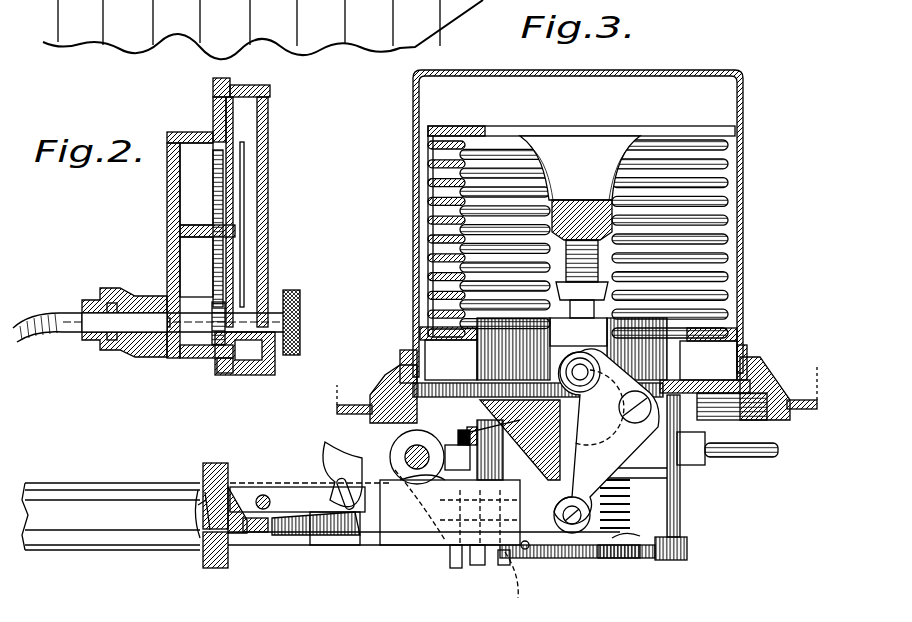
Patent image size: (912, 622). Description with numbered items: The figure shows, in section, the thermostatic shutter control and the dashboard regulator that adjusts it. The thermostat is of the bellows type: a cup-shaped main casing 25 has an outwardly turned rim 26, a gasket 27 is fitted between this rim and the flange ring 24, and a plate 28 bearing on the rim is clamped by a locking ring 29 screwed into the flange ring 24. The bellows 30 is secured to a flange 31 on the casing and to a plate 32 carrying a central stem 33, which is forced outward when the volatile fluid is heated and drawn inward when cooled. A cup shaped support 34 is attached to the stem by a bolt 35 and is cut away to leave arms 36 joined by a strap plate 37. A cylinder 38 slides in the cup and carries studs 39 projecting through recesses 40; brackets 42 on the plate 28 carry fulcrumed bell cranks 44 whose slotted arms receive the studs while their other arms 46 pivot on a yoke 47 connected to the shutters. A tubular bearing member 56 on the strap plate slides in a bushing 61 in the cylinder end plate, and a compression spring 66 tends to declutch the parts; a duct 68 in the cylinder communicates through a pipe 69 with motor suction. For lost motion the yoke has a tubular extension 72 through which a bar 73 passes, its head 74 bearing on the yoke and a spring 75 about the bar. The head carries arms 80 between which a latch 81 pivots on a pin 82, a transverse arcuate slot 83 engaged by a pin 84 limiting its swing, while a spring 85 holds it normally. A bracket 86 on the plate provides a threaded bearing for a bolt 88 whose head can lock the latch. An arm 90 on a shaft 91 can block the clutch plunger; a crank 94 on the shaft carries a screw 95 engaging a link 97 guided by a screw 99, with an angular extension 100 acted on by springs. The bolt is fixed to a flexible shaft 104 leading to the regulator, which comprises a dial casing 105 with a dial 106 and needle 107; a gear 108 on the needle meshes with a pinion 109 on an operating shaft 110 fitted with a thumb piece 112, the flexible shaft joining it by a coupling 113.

In FIG. 2, the flexible shaft 104 is at (45, 312).
In FIG. 2, the dial casing 105 is at (270, 87).
In FIG. 2, the dial 106 is at (233, 123).
In FIG. 2, the needle 107 is at (244, 153).
In FIG. 2, the gear 108 is at (223, 258).
In FIG. 2, the pinion 109 is at (222, 345).
In FIG. 2, the operating shaft 110 is at (250, 318).
In FIG. 2, the thumb piece 112 is at (300, 320).
In FIG. 2, the coupling 113 is at (120, 295).
In FIG. 3, the flange ring 24 is at (770, 365).
In FIG. 3, the main casing 25 is at (740, 330).
In FIG. 3, the outwardly turned rim 26 is at (385, 378).
In FIG. 3, the gasket 27 is at (410, 355).
In FIG. 3, the plate 28 is at (690, 357).
In FIG. 3, the locking ring 29 is at (715, 420).
In FIG. 3, the bellows 30 is at (743, 235).
In FIG. 3, the flange 31 is at (745, 348).
In FIG. 3, the plate 32 is at (472, 126).
In FIG. 3, the central stem 33 is at (580, 168).
In FIG. 3, the cup shaped support 34 is at (472, 357).
In FIG. 3, the bolt 35 is at (598, 258).
In FIG. 3, the arms 36 is at (680, 505).
In FIG. 3, the strap plate 37 is at (660, 560).
In FIG. 3, the cylinder 38 is at (647, 477).
In FIG. 3, the studs 39 is at (572, 375).
In FIG. 3, the recesses 40 is at (603, 336).
In FIG. 3, the brackets 42 is at (559, 509).
In FIG. 3, the bell cranks 44 is at (606, 436).
In FIG. 3, the arms 46 is at (574, 533).
In FIG. 3, the yoke 47 is at (440, 548).
In FIG. 3, the tubular bearing member 56 is at (620, 560).
In FIG. 3, the bushing 61 is at (630, 500).
In FIG. 3, the compression spring 66 is at (636, 526).
In FIG. 3, the duct 68 is at (720, 335).
In FIG. 3, the pipe 69 is at (765, 457).
In FIG. 3, the tubular extension 72 is at (140, 485).
In FIG. 3, the bar 73 is at (205, 480).
In FIG. 3, the head 74 is at (228, 568).
In FIG. 3, the spring 75 is at (197, 540).
In FIG. 3, the arms 80 is at (350, 545).
In FIG. 3, the latch 81 is at (292, 488).
In FIG. 3, the pin 82 is at (263, 495).
In FIG. 3, the transverse arcuate slot 83 is at (334, 465).
In FIG. 3, the pin 84 is at (340, 497).
In FIG. 3, the spring 85 is at (300, 535).
In FIG. 3, the bracket 86 is at (392, 460).
In FIG. 3, the bolt 88 is at (392, 450).
In FIG. 3, the arm 90 is at (527, 552).
In FIG. 3, the shaft 91 is at (521, 585).
In FIG. 3, the crank 94 is at (477, 565).
In FIG. 3, the screw 95 is at (456, 568).
In FIG. 3, the link 97 is at (504, 565).
In FIG. 3, the screw 99 is at (485, 440).
In FIG. 3, the angular extension 100 is at (406, 503).